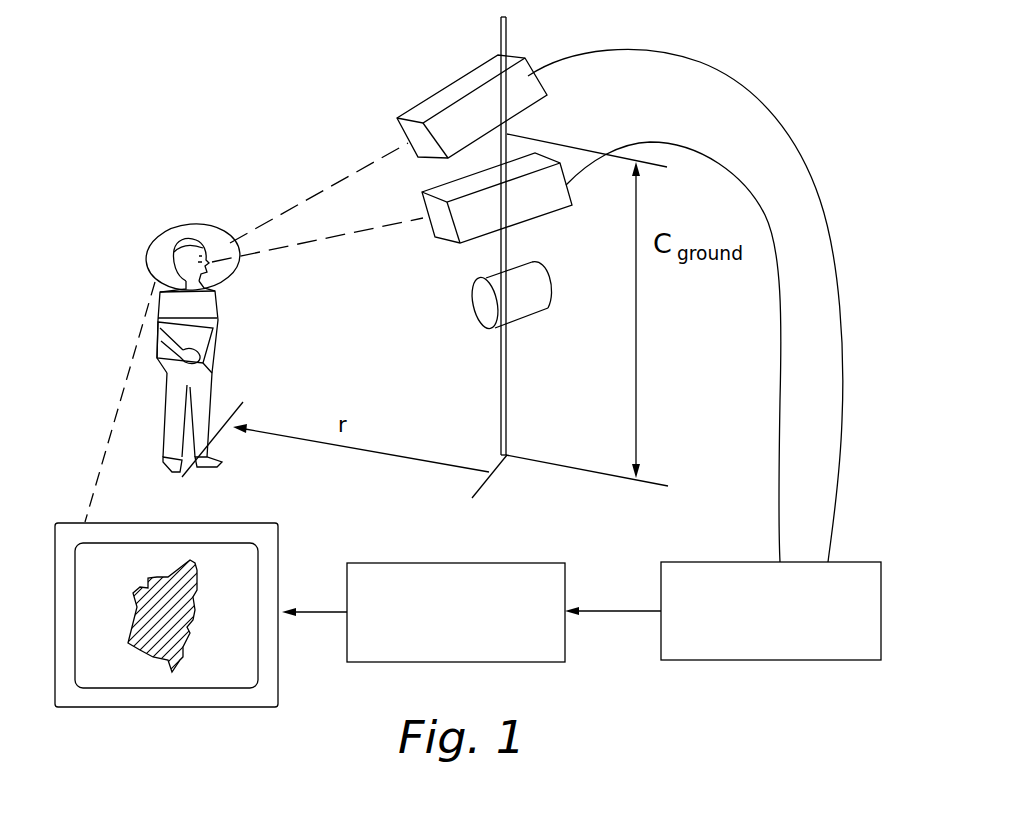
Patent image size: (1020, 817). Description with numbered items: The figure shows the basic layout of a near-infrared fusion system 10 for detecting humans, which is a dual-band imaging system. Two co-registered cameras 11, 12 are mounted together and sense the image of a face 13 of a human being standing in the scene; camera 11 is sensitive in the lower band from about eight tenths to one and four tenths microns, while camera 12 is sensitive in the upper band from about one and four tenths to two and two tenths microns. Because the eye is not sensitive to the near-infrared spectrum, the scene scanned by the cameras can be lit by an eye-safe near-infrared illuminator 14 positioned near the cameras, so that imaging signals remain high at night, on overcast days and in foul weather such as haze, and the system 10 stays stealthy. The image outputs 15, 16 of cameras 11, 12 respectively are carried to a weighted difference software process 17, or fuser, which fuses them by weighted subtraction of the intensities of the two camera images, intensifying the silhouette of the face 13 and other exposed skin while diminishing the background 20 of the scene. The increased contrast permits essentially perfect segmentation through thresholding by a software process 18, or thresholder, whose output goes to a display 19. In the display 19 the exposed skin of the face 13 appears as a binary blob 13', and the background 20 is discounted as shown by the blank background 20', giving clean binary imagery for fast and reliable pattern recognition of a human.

The near-infrared fusion system 10 is at (316, 91).
The camera 11 is at (547, 78).
The camera 12 is at (572, 195).
The face 13 is at (208, 230).
The near-infrared illuminator 14 is at (548, 292).
The image output 15 is at (722, 68).
The image output 16 is at (682, 143).
The weighted difference software process 17 is at (750, 562).
The thresholding software process 18 is at (497, 563).
The display 19 is at (280, 578).
The background 20 is at (222, 265).
The blank background 20' is at (188, 579).
The binary blob 13' is at (165, 620).